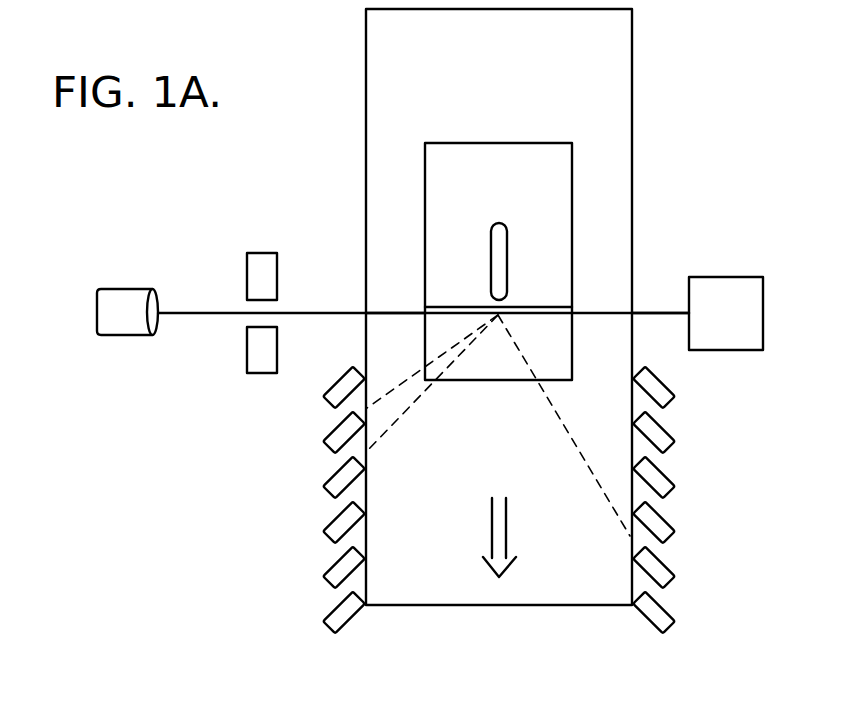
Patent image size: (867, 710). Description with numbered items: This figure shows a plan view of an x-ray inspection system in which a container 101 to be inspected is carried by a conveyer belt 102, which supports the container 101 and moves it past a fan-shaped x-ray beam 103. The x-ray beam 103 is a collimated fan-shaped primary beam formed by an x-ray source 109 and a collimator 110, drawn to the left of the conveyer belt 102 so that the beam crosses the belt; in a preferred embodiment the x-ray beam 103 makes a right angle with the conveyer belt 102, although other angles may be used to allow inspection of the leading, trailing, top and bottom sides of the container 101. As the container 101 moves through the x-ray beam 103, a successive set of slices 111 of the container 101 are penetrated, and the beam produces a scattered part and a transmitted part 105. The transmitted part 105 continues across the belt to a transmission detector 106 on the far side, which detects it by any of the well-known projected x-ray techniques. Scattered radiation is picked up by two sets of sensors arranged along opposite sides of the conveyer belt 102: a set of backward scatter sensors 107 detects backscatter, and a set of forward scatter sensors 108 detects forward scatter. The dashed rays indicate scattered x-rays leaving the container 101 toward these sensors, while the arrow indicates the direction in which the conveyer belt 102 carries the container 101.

The container 101 is at (572, 185).
The conveyer belt 102 is at (632, 103).
The x-ray beam 103 is at (315, 313).
The transmitted part 105 is at (659, 312).
The transmission detector 106 is at (733, 350).
The backward scatter sensors 107 is at (323, 615).
The forward scatter sensors 108 is at (671, 612).
The x-ray source 109 is at (130, 290).
The collimator 110 is at (263, 253).
The slices 111 is at (390, 313).